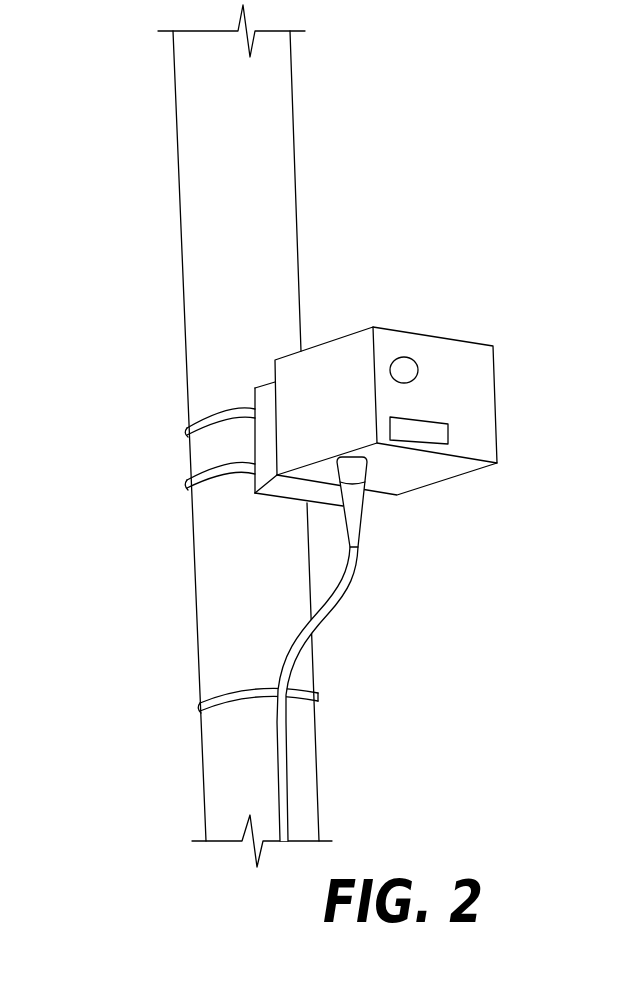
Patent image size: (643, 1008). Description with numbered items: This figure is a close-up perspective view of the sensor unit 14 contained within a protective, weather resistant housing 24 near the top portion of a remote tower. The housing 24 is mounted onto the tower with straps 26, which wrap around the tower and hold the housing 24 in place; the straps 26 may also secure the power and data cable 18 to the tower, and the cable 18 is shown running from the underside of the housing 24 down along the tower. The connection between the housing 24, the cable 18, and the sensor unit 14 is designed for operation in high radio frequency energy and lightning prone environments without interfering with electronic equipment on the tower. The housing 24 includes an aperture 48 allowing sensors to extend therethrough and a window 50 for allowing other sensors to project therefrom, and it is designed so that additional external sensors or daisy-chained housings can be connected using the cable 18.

The sensor unit 14 is at (439, 374).
The cable 18 is at (290, 823).
The weather resistant housing 24 is at (462, 370).
The straps 26 is at (187, 428).
The apertures 48 is at (403, 357).
The windows 50 is at (448, 432).